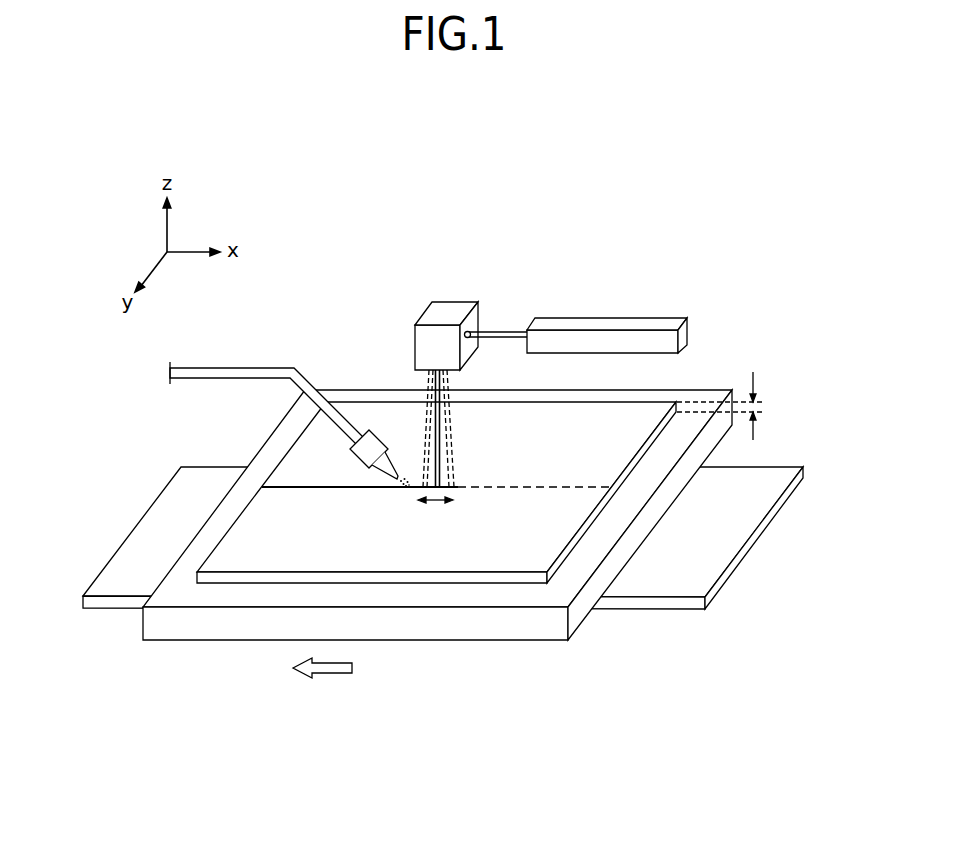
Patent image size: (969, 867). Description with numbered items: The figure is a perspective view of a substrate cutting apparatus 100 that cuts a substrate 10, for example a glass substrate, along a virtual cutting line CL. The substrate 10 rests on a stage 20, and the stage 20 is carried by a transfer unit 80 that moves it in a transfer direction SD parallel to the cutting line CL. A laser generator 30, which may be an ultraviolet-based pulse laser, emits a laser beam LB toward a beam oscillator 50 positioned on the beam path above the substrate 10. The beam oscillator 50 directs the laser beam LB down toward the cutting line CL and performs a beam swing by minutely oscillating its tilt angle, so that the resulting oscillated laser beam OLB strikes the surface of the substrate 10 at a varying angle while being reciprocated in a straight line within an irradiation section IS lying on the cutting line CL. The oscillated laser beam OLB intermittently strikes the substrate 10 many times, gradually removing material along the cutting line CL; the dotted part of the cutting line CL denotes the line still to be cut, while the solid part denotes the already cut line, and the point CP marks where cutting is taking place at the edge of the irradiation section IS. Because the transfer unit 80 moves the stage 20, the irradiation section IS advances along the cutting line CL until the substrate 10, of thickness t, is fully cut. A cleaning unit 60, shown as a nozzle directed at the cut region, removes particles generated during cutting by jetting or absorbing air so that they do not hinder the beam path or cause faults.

The substrate cutting apparatus 100 is at (415, 172).
The substrate 10 is at (558, 521).
The stage 20 is at (592, 634).
The laser generator 30 is at (617, 310).
The beam oscillator 50 is at (458, 291).
The cleaning unit 60 is at (261, 360).
The transfer unit 80 is at (767, 541).
The laser beam LB is at (500, 331).
The oscillated laser beam OLB is at (430, 417).
The cutting line CL is at (300, 488).
The cutting point CP is at (405, 488).
The irradiation section IS is at (436, 502).
The transfer direction SD is at (329, 675).
The substrate thickness t is at (725, 406).